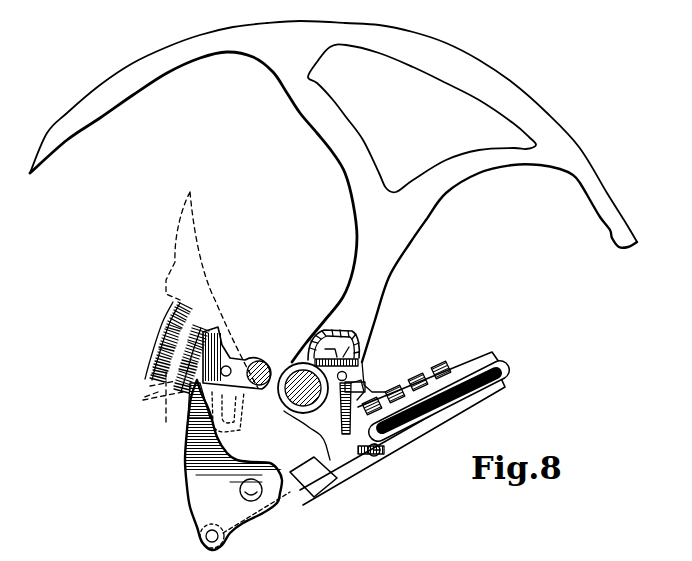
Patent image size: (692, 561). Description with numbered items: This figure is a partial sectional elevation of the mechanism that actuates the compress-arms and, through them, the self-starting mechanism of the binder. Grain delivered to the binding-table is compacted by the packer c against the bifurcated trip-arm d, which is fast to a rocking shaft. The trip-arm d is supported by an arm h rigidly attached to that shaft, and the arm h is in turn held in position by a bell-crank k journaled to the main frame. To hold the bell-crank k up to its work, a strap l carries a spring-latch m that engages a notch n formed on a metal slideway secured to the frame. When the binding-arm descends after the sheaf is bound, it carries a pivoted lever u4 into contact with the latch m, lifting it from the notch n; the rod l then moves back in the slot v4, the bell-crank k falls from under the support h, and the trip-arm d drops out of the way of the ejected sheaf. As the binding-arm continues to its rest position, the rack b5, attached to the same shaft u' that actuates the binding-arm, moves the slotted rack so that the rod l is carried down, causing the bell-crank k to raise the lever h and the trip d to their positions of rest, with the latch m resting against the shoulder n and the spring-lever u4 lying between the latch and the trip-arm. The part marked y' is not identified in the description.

The yoke arm y' is at (333, 206).
The trip-arm d is at (200, 312).
The arm h is at (237, 358).
The shaft u' is at (301, 411).
The bell-crank k is at (237, 465).
The strap l is at (313, 477).
The slot v4 is at (468, 378).
The packer c is at (406, 388).
The rack b5 is at (341, 343).
The pivoted lever u4 is at (353, 366).
The spring-latch m is at (368, 440).
The notch n is at (382, 446).